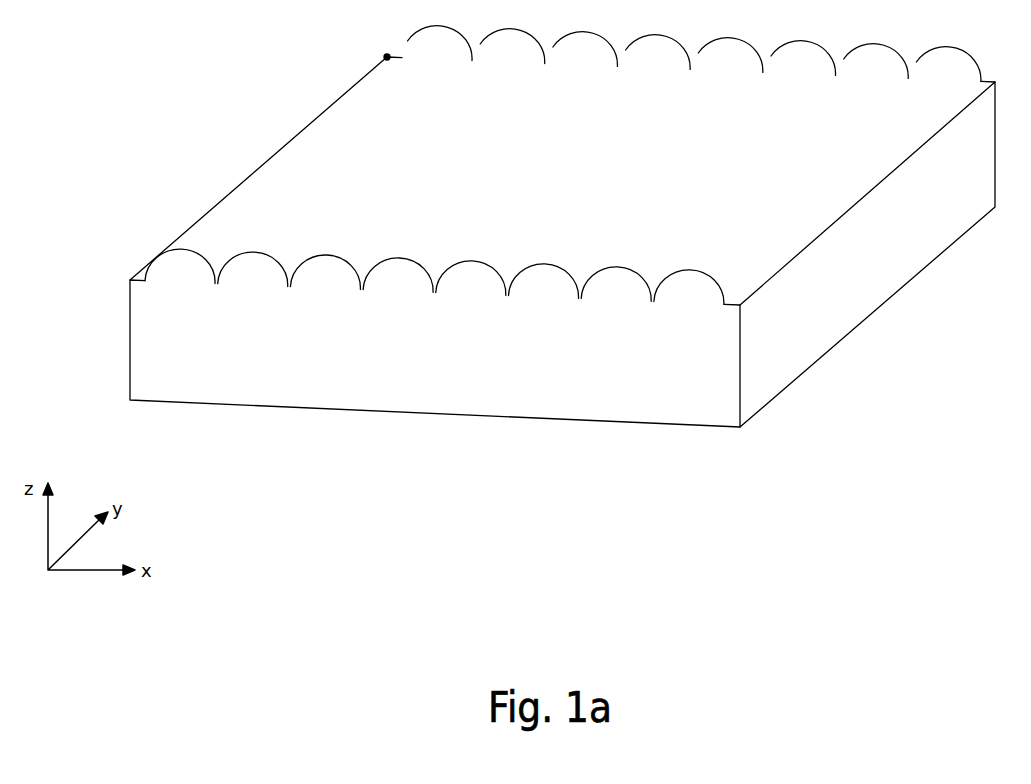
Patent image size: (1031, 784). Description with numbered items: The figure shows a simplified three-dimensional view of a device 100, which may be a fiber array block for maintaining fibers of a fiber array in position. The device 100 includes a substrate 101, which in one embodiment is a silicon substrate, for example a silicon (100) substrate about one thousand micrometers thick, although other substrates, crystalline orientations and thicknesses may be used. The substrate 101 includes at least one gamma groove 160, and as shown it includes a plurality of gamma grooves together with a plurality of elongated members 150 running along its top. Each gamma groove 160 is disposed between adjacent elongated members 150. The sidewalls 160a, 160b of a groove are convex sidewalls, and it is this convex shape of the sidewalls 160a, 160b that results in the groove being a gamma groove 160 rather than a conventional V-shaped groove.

The device 100 is at (562, 339).
The substrate 101 is at (805, 312).
The elongated members 150 is at (307, 172).
The gamma groove 160 is at (647, 312).
The first sidewall 160a is at (427, 283).
The second sidewall 160b is at (440, 282).